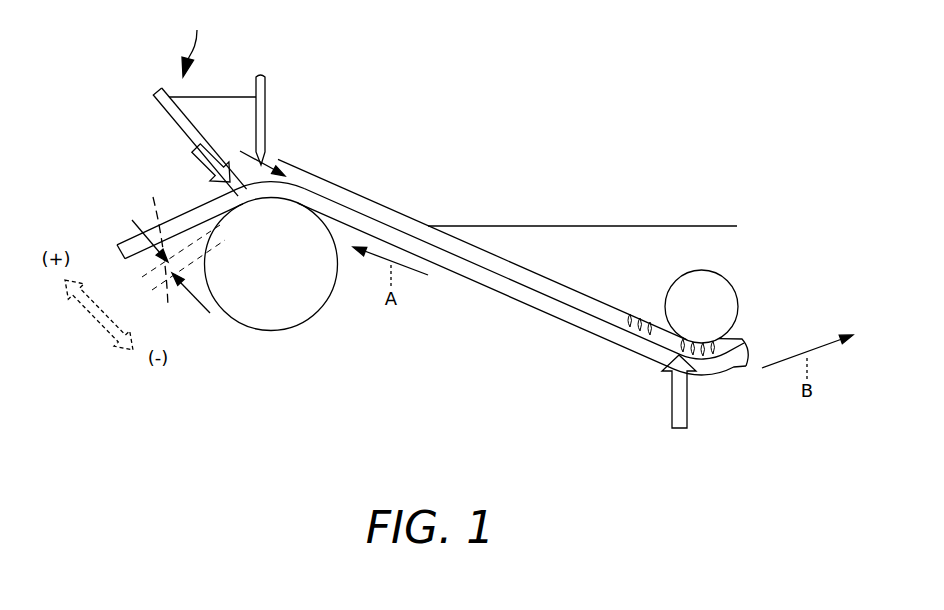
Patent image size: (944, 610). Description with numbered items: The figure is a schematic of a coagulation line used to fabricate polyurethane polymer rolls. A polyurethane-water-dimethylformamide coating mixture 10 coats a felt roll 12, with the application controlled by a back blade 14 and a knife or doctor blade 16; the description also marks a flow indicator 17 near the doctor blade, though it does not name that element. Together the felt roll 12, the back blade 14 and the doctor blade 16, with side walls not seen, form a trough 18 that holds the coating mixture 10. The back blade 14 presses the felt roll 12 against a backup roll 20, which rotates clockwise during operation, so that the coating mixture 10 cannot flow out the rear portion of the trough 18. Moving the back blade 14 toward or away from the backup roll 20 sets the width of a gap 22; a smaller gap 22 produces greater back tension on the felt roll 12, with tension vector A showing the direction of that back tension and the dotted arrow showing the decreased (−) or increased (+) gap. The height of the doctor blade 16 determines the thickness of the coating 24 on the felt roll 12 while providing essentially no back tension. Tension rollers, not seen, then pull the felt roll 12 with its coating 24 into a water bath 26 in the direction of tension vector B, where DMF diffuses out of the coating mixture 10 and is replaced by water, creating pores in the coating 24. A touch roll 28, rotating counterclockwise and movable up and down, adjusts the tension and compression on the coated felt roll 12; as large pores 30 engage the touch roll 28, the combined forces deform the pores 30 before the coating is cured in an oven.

The coating mixture 10 is at (222, 97).
The felt roll 12 is at (479, 272).
The back blade 14 is at (177, 124).
The doctor blade 16 is at (265, 85).
The coating material flow 17 is at (263, 164).
The trough 18 is at (195, 42).
The backup roll 20 is at (270, 322).
The gap 22 is at (178, 264).
The coating 24 is at (370, 203).
The water bath 26 is at (594, 236).
The touch roll 28 is at (727, 303).
The pores 30 is at (654, 344).